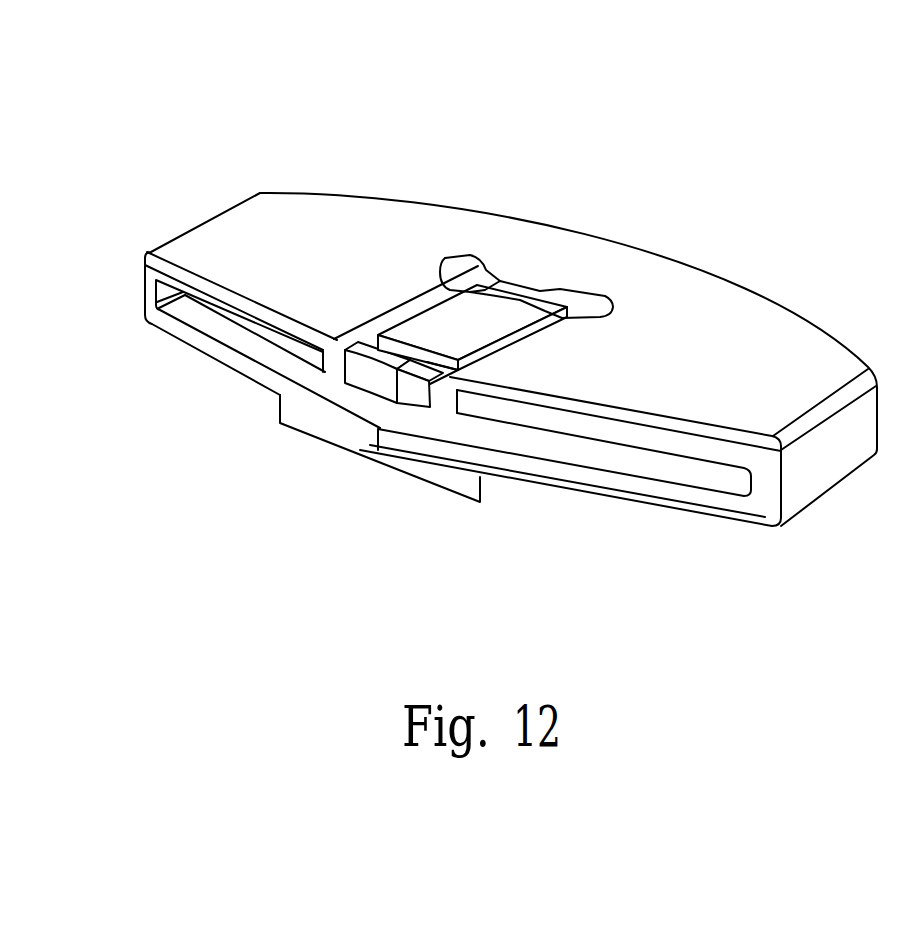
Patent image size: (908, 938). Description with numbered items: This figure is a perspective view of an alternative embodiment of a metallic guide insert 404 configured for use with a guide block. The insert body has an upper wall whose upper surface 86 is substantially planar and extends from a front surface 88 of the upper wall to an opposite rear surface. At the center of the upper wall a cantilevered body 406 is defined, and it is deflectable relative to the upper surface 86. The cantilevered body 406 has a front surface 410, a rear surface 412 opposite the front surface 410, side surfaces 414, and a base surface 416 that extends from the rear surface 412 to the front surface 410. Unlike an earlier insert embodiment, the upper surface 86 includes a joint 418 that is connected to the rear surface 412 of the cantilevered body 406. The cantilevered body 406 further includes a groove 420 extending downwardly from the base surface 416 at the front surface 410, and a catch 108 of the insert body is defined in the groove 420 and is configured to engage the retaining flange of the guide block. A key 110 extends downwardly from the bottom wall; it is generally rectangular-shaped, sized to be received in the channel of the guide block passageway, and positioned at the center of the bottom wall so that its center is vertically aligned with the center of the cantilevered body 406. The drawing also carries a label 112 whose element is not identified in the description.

The metallic guide insert 404 is at (657, 122).
The upper surface 86 is at (203, 237).
The front surface 88 is at (258, 325).
The key 110 is at (297, 418).
The front plate 112 is at (673, 508).
The side surfaces 414 is at (482, 358).
The front surface 410 is at (357, 383).
The catch 108 is at (402, 372).
The cantilevered body 406 is at (428, 324).
The groove 420 is at (428, 361).
The joint 418 is at (500, 279).
The base surface 416 is at (513, 313).
The rear surface 412 is at (569, 288).